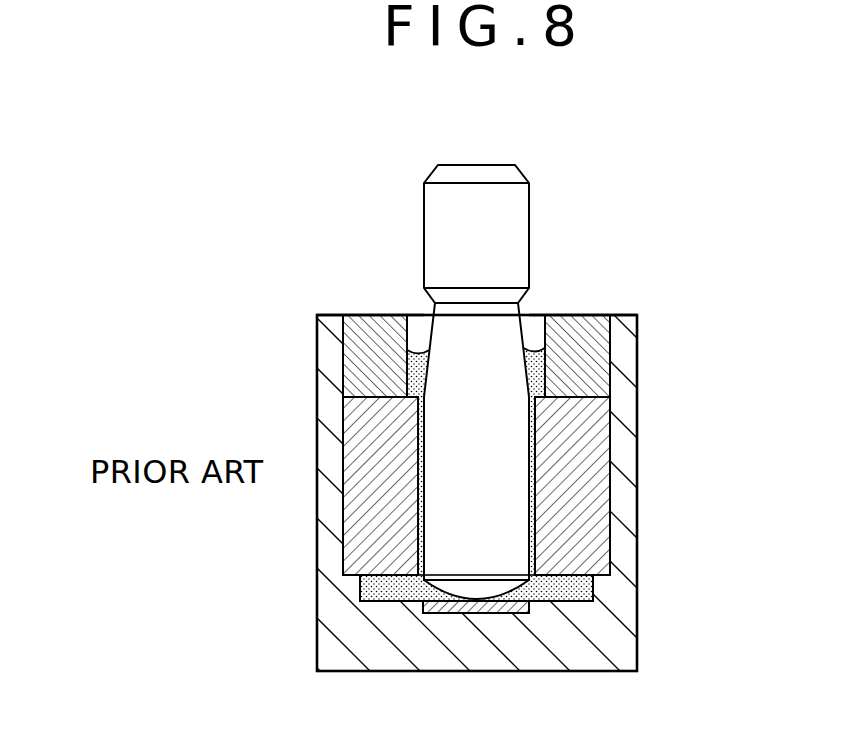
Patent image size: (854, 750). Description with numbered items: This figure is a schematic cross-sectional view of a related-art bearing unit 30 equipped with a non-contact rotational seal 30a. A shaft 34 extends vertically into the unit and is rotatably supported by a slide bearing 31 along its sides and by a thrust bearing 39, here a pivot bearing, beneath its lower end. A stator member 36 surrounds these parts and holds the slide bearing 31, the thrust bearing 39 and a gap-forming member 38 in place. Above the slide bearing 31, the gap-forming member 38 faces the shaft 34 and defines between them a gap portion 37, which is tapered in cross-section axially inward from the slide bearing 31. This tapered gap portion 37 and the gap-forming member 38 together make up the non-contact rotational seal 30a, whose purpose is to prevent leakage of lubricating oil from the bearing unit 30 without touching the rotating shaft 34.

The bearing unit 30 is at (341, 220).
The non-contact rotational seal 30a is at (602, 212).
The slide bearing 31 is at (610, 463).
The shaft 34 is at (474, 182).
The stator member 36 is at (608, 625).
The gap portion 37 is at (537, 325).
The gap-forming member 38 is at (592, 330).
The thrust bearing 39 is at (495, 605).